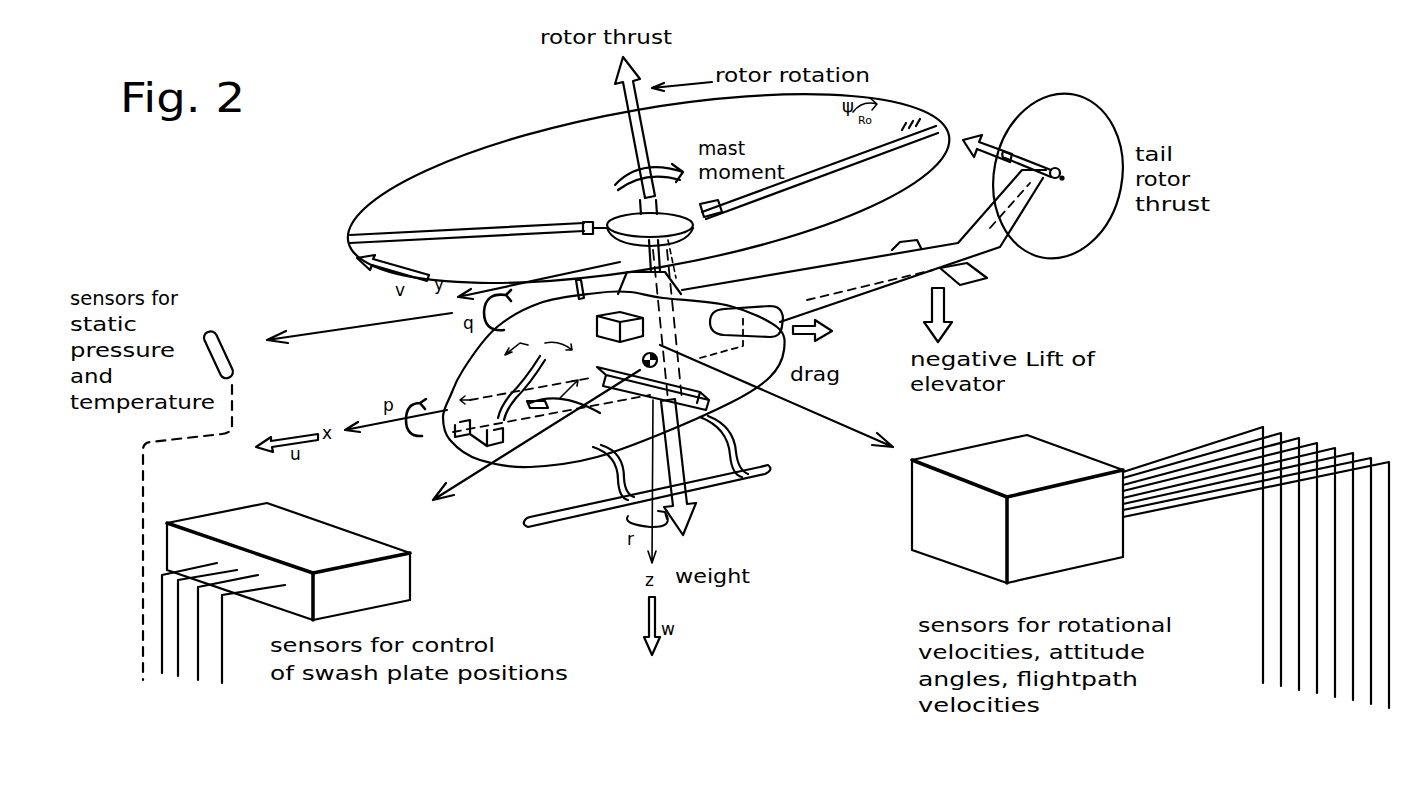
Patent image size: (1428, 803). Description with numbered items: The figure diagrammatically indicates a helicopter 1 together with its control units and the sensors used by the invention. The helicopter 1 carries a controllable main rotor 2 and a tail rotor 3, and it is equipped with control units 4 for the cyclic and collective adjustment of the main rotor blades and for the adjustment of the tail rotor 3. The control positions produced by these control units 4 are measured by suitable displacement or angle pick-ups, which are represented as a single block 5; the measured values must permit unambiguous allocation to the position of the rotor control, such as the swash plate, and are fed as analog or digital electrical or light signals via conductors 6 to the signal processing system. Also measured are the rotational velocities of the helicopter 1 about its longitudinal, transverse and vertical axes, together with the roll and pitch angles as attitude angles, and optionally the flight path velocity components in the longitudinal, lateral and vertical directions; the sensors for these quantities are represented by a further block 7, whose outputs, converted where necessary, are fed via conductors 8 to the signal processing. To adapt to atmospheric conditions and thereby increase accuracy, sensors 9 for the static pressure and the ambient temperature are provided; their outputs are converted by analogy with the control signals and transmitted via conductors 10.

The helicopter 1 is at (804, 310).
The main rotor 2 is at (548, 213).
The tail rotor 3 is at (1106, 200).
The control units 4 is at (468, 358).
The block of control position sensors 5 is at (711, 410).
The conductors 6 is at (223, 682).
The block of rotational velocity and attitude angle sensors 7 is at (927, 520).
The conductors 8 is at (1393, 705).
The sensors for static pressure and ambient temperature 9 is at (580, 278).
The conductors 10 is at (143, 680).